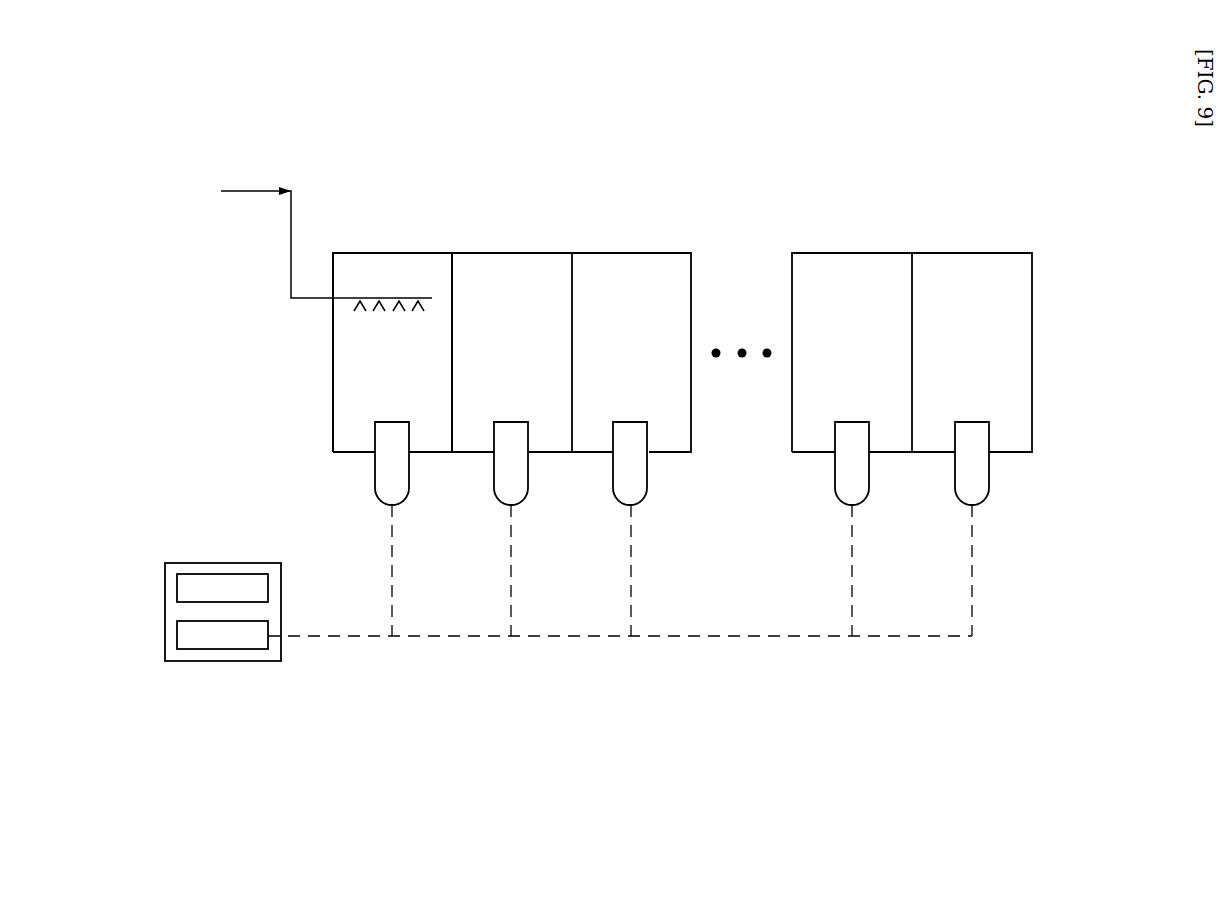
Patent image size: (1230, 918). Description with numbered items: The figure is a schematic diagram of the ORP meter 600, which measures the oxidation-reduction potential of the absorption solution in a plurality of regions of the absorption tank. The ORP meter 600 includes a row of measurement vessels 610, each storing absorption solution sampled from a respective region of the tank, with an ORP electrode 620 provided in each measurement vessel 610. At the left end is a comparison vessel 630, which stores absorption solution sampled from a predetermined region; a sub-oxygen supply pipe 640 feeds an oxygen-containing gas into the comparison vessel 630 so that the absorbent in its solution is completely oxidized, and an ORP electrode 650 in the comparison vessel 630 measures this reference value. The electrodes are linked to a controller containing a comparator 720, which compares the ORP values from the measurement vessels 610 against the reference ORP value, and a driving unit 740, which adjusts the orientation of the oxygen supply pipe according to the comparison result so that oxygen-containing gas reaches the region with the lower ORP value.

The ORP meter 600 is at (1066, 474).
The measurement vessels 610 is at (535, 302).
The ORP electrodes 620 is at (960, 505).
The comparison vessel 630 is at (367, 376).
The sub-oxygen supply pipe 640 is at (291, 245).
The ORP electrode 650 is at (392, 505).
The comparator 720 is at (177, 637).
The driving unit 740 is at (177, 588).